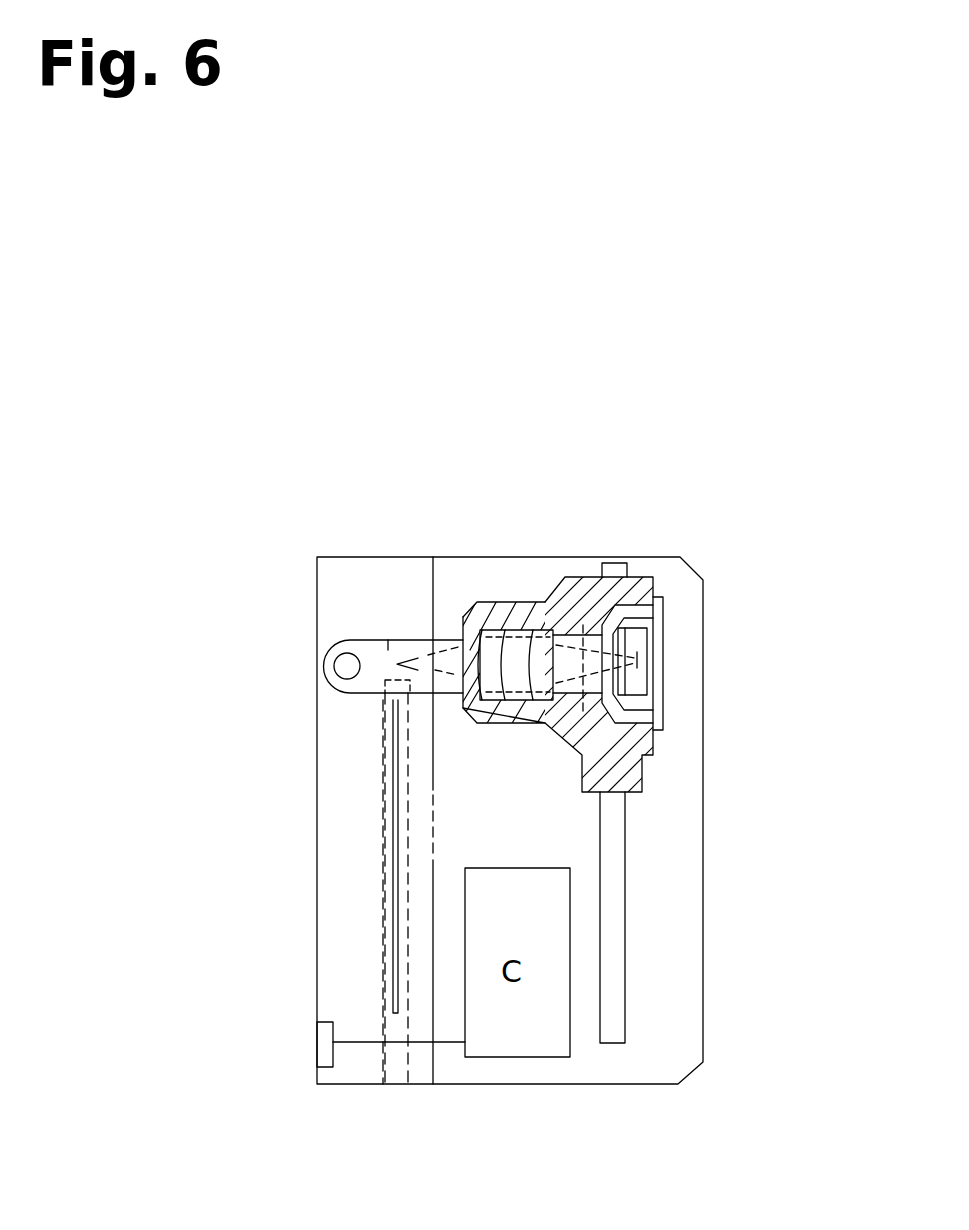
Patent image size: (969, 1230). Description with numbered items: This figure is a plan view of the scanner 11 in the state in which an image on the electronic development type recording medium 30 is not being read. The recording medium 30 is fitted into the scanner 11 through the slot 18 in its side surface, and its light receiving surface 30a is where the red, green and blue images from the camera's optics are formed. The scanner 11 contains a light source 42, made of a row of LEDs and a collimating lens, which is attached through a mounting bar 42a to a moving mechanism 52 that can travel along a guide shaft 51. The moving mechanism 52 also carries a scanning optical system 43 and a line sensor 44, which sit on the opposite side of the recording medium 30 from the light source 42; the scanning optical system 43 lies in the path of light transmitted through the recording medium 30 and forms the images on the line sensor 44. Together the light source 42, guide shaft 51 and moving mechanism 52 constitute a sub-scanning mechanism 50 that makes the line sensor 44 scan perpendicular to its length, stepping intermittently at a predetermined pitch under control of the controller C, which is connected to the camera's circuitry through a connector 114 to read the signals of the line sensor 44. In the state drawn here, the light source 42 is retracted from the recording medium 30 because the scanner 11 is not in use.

The scanner 11 is at (529, 558).
The light source 42 is at (346, 660).
The mounting bar 42a is at (389, 650).
The scanning optical system 43 is at (493, 627).
The moving mechanism 52 is at (575, 593).
The sub-scanning mechanism 50 is at (681, 627).
The line sensor 44 is at (637, 660).
The electronic development type recording medium 30 is at (383, 810).
The light receiving surface 30a is at (383, 850).
The slot 18 is at (383, 942).
The connector 114 is at (332, 1042).
The guide shaft 51 is at (615, 957).